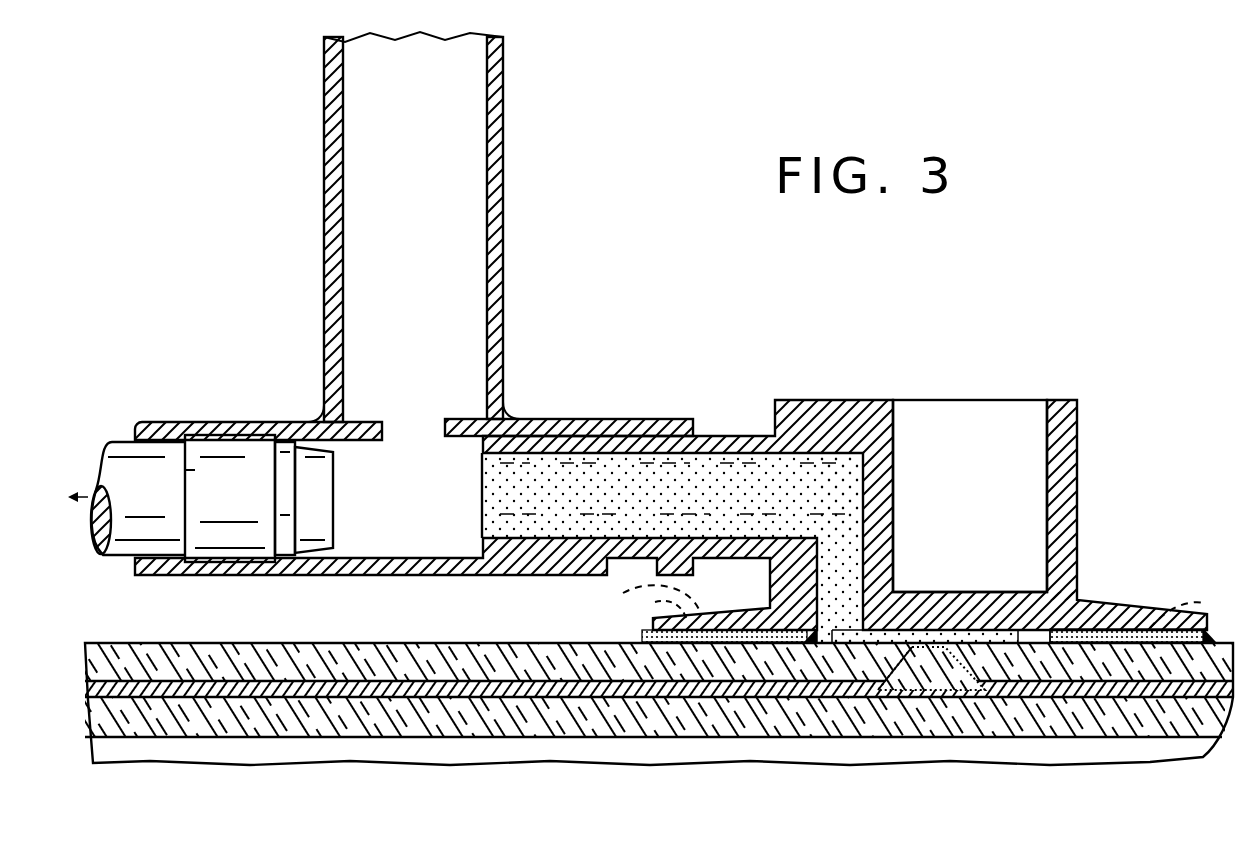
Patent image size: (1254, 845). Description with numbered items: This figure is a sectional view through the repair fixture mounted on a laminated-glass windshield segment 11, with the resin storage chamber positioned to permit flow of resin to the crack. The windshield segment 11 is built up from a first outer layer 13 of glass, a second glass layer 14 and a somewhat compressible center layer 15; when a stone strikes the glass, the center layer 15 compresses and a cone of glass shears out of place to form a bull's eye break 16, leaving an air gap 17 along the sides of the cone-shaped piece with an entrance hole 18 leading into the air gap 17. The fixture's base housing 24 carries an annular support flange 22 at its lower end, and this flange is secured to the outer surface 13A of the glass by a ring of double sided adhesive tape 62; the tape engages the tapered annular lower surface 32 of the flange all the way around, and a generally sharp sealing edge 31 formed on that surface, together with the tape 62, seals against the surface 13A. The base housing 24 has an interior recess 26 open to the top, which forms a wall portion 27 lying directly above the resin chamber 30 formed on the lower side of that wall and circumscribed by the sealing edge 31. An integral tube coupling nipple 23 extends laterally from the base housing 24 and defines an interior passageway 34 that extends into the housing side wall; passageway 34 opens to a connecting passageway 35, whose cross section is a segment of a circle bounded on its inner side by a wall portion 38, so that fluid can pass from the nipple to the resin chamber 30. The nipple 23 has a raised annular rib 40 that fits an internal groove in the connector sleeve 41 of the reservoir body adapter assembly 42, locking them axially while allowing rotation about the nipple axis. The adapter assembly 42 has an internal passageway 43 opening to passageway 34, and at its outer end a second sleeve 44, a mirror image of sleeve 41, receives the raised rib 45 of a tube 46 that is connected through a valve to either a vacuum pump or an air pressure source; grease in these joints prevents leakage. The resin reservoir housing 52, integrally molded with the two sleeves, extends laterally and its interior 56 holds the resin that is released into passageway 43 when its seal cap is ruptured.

The windshield segment 11 is at (752, 766).
The first outer layer 13 is at (250, 665).
The outer surface 13A is at (402, 638).
The second glass layer 14 is at (313, 720).
The center layer 15 is at (528, 690).
The bull's eye break 16 is at (930, 672).
The air gap 17 is at (900, 648).
The entrance hole 18 is at (930, 645).
The annular support flange 22 is at (1140, 540).
The tube coupling nipple 23 is at (720, 412).
The base housing 24 is at (1063, 400).
The interior recess 26 is at (995, 412).
The wall portion 27 is at (993, 596).
The resin chamber 30 is at (1018, 650).
The sealing edge 31 is at (808, 646).
The tapered annular lower surface 32 is at (710, 634).
The interior passageway 34 is at (783, 475).
The connecting passageway 35 is at (868, 562).
The wall portion 38 is at (880, 466).
The raised annular rib 40 is at (600, 419).
The connector sleeve 41 is at (527, 419).
The reservoir body adapter assembly 42 is at (520, 330).
The internal passageway 43 is at (400, 530).
The second sleeve 44 is at (242, 424).
The raised rib 45 is at (215, 460).
The tube 46 is at (140, 538).
The resin reservoir housing 52 is at (323, 376).
The interior 56 is at (489, 98).
The double sided adhesive tape 62 is at (645, 636).